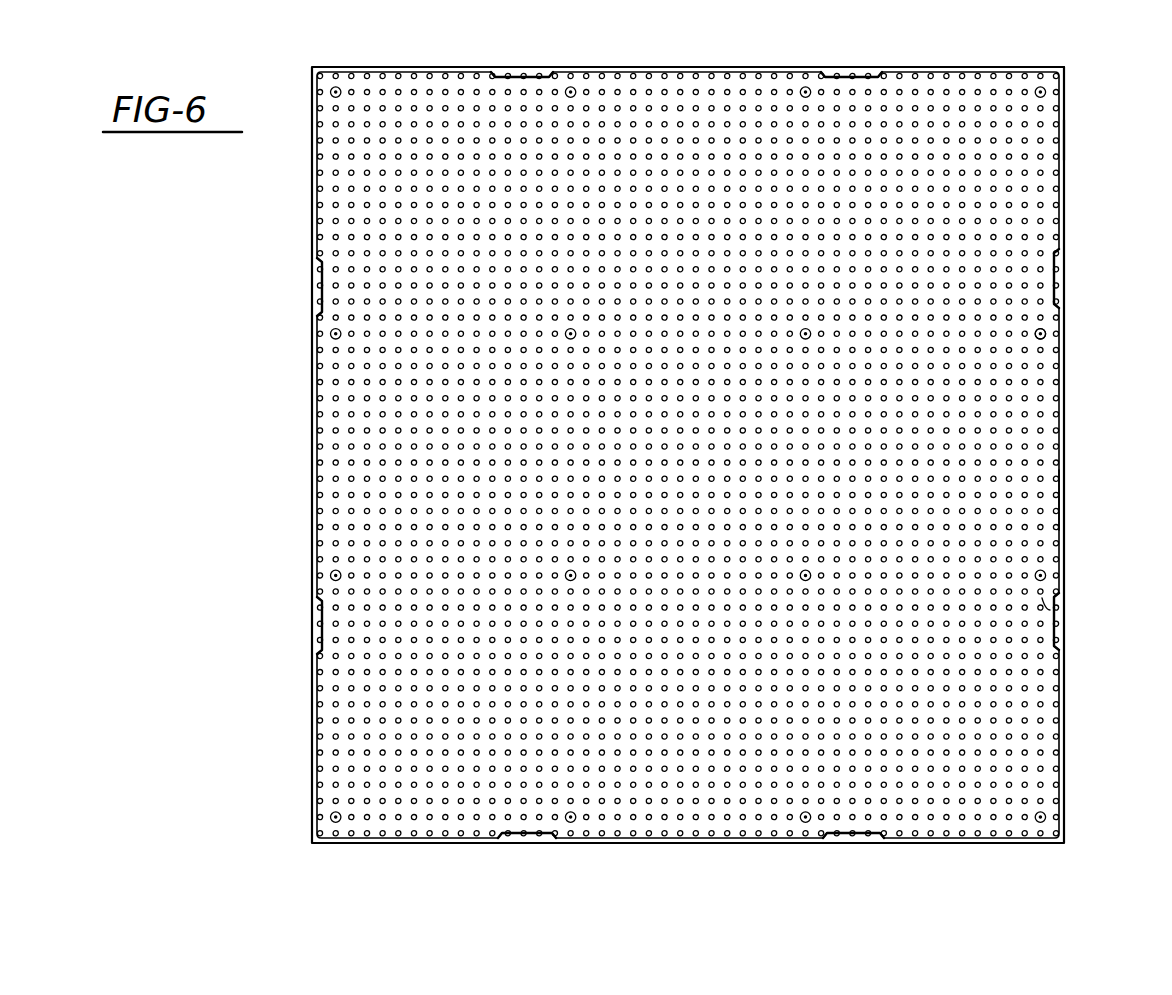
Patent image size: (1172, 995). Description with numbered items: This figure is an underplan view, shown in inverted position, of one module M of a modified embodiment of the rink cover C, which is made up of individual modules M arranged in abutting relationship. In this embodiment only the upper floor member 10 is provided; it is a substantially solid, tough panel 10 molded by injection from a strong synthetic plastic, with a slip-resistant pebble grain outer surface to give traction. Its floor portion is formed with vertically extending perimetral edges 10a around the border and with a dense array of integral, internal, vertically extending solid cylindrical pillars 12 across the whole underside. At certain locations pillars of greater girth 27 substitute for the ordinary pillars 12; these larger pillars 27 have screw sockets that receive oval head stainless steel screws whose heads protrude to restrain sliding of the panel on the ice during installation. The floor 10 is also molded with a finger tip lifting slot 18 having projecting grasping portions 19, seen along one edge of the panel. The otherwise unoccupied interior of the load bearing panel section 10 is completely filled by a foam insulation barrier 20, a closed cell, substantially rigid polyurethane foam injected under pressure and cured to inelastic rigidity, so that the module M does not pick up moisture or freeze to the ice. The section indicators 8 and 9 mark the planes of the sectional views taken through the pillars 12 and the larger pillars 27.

The upper floor member 10 is at (1064, 108).
The perimetral edges 10a is at (1065, 240).
The solid cylindrical pillars 12 is at (1042, 478).
The pillars of greater girth 27 is at (1044, 336).
The foam insulation barrier 20 is at (1050, 500).
The finger tip lifting slot 18 is at (1042, 598).
The grasping portions 19 is at (1060, 622).
The rink cover C is at (1040, 66).
The module M is at (1067, 142).
The section line 8- 8 is at (1092, 188).
The section line 9- 9 is at (545, 818).